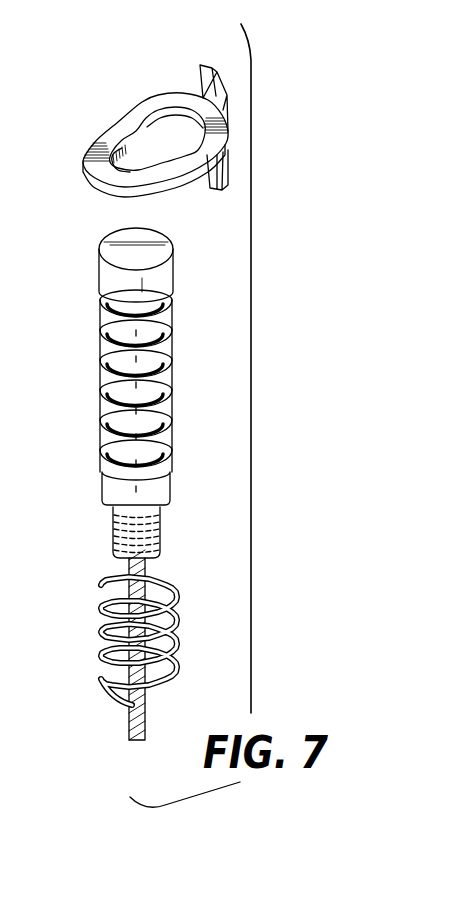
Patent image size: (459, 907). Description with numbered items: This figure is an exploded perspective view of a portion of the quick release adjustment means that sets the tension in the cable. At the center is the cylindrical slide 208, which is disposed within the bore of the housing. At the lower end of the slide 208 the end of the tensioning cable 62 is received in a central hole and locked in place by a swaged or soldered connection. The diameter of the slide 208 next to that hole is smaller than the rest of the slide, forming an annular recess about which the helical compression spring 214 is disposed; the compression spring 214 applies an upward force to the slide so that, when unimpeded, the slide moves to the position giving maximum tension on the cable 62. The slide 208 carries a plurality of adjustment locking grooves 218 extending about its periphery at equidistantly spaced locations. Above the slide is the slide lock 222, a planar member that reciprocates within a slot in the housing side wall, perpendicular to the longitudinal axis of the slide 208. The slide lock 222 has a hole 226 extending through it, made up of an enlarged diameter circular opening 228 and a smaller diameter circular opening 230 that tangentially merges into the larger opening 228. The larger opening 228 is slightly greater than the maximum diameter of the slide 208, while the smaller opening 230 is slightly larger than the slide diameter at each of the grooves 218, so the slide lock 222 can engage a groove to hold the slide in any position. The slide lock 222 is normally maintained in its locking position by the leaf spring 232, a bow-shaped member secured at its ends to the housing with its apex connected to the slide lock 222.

The slide lock 222 is at (103, 183).
The hole 226 is at (152, 148).
The enlarged diameter circular opening 228 is at (180, 123).
The smaller diameter circular opening 230 is at (125, 153).
The leaf spring 232 is at (210, 92).
The cylindrical slide 208 is at (162, 487).
The adjustment locking grooves 218 is at (112, 372).
The tensioning cable 62 is at (147, 572).
The helical compression spring 214 is at (173, 623).